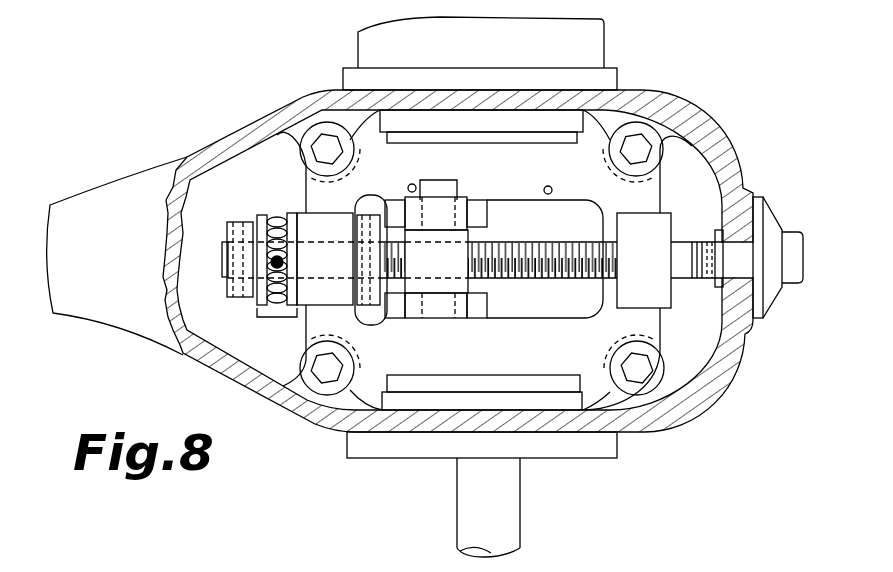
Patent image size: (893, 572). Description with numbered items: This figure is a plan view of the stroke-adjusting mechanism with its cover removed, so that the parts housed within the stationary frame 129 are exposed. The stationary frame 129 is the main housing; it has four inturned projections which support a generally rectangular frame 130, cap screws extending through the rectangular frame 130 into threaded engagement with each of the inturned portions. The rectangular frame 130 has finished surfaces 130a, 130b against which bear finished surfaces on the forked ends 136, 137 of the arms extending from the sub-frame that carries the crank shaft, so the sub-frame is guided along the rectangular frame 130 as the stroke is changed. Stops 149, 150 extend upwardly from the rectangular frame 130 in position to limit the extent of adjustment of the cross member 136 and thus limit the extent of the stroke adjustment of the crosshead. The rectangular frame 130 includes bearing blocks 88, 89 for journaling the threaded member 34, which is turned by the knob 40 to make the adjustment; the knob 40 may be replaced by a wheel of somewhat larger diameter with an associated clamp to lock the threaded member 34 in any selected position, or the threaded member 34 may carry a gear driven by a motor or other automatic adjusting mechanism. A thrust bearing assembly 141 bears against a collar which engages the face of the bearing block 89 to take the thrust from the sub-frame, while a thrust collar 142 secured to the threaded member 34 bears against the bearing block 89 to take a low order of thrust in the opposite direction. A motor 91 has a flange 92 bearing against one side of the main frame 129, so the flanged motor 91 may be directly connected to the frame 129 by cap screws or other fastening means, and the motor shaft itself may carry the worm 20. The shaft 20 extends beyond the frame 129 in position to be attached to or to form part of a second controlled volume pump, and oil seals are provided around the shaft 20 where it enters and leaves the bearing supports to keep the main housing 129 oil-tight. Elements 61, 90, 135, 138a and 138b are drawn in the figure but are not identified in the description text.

The worm shaft 20 is at (475, 497).
The threaded member 34 is at (513, 273).
The knob 40 is at (773, 230).
The housing 61 is at (680, 103).
The bearing block 88 is at (655, 230).
The bearing block 89 is at (312, 225).
The housing boss 90 is at (643, 327).
The motor 91 is at (372, 43).
The flange 92 is at (612, 70).
The stationary frame 129 is at (215, 157).
The rectangular frame 130 is at (558, 356).
The finished surface 130a is at (523, 199).
The finished surface 130b is at (540, 318).
The projection 135 is at (430, 188).
The forked end 136 is at (398, 307).
The forked end 137 is at (397, 213).
The upper block 138a is at (445, 220).
The lower block 138b is at (430, 305).
The thrust bearing assembly 141 is at (278, 319).
The thrust collar 142 is at (368, 290).
The stop 149 is at (408, 185).
The stop 150 is at (553, 187).